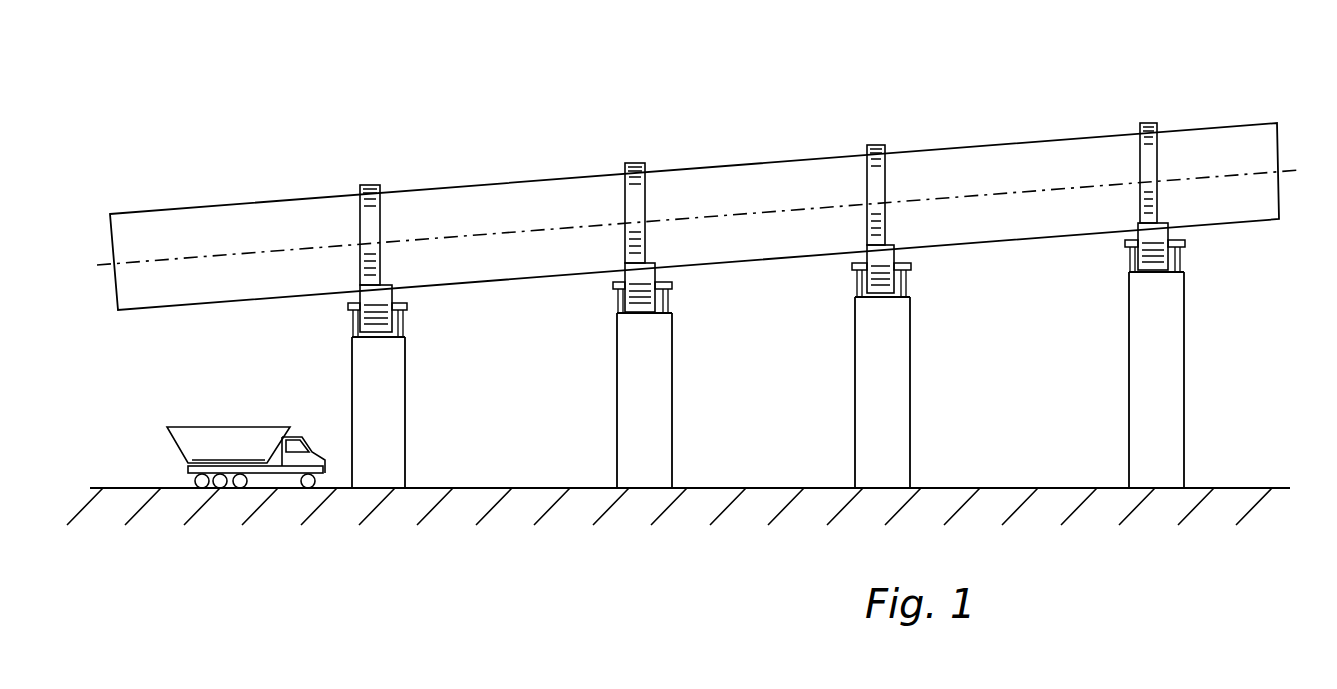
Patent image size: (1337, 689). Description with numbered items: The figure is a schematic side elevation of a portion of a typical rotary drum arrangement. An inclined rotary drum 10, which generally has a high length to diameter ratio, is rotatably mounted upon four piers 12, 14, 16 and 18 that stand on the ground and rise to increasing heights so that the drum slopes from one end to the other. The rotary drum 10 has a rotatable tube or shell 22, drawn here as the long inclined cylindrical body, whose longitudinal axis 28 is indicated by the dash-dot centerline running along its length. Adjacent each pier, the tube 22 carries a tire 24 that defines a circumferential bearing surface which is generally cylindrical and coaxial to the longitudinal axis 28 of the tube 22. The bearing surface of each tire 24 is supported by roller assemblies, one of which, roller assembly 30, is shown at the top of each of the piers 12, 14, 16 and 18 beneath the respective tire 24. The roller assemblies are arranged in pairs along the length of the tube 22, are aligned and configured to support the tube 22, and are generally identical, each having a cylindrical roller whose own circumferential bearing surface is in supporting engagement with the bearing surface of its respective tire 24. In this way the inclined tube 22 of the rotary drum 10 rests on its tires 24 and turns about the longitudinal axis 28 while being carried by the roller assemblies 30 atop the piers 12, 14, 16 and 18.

The inclined rotary drum 10 is at (486, 136).
The pier 12 is at (406, 385).
The pier 14 is at (672, 358).
The pier 16 is at (910, 340).
The pier 18 is at (1184, 323).
The rotatable tube or shell 22 is at (759, 186).
The tire 24 is at (354, 228).
The longitudinal axis 28 is at (1018, 188).
The roller assembly 30 is at (349, 321).